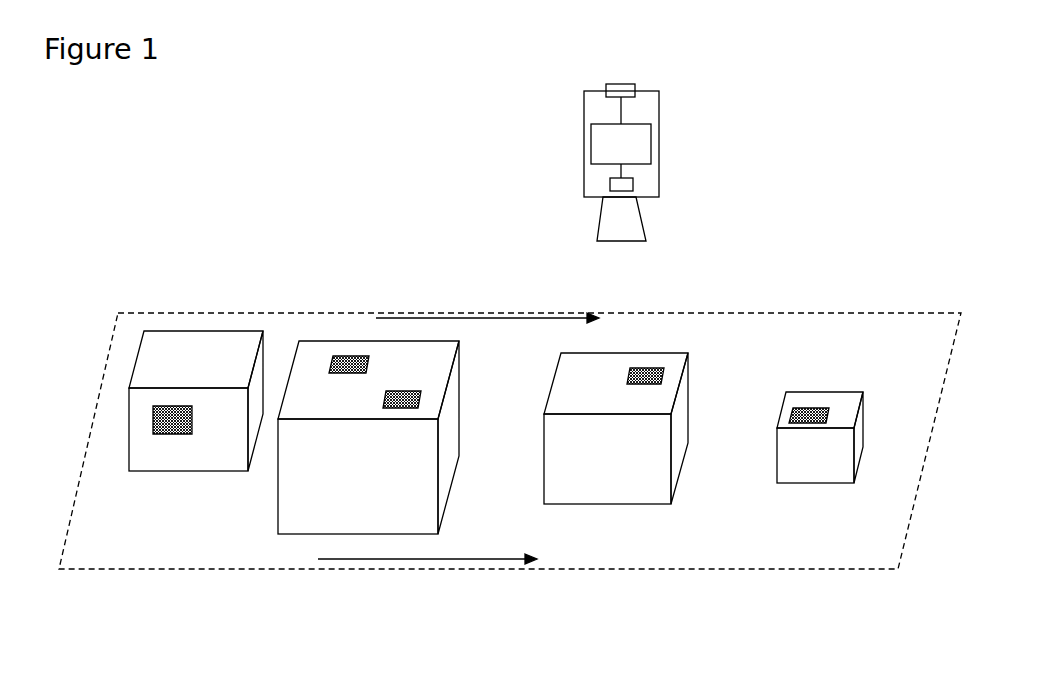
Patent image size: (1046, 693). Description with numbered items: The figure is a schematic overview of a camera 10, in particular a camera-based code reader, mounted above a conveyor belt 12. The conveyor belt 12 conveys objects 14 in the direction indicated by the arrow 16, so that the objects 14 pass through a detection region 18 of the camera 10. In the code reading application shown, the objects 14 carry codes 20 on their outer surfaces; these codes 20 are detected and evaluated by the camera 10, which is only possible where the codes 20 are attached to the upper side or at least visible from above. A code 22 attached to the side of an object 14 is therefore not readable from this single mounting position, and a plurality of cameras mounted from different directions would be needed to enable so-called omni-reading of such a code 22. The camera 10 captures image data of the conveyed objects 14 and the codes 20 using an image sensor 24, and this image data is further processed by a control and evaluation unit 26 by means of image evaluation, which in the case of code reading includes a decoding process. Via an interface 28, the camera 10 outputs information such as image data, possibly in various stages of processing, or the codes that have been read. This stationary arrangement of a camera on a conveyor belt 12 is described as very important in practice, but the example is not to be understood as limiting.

The camera 10 is at (618, 139).
The conveyor belt 12 is at (865, 570).
The objects 14 is at (293, 508).
The arrow 16 is at (407, 558).
The detection region 18 is at (657, 300).
The codes 20 is at (397, 397).
The code 22 is at (162, 432).
The image sensor 24 is at (611, 186).
The control and evaluation unit 26 is at (645, 165).
The interface 28 is at (612, 84).